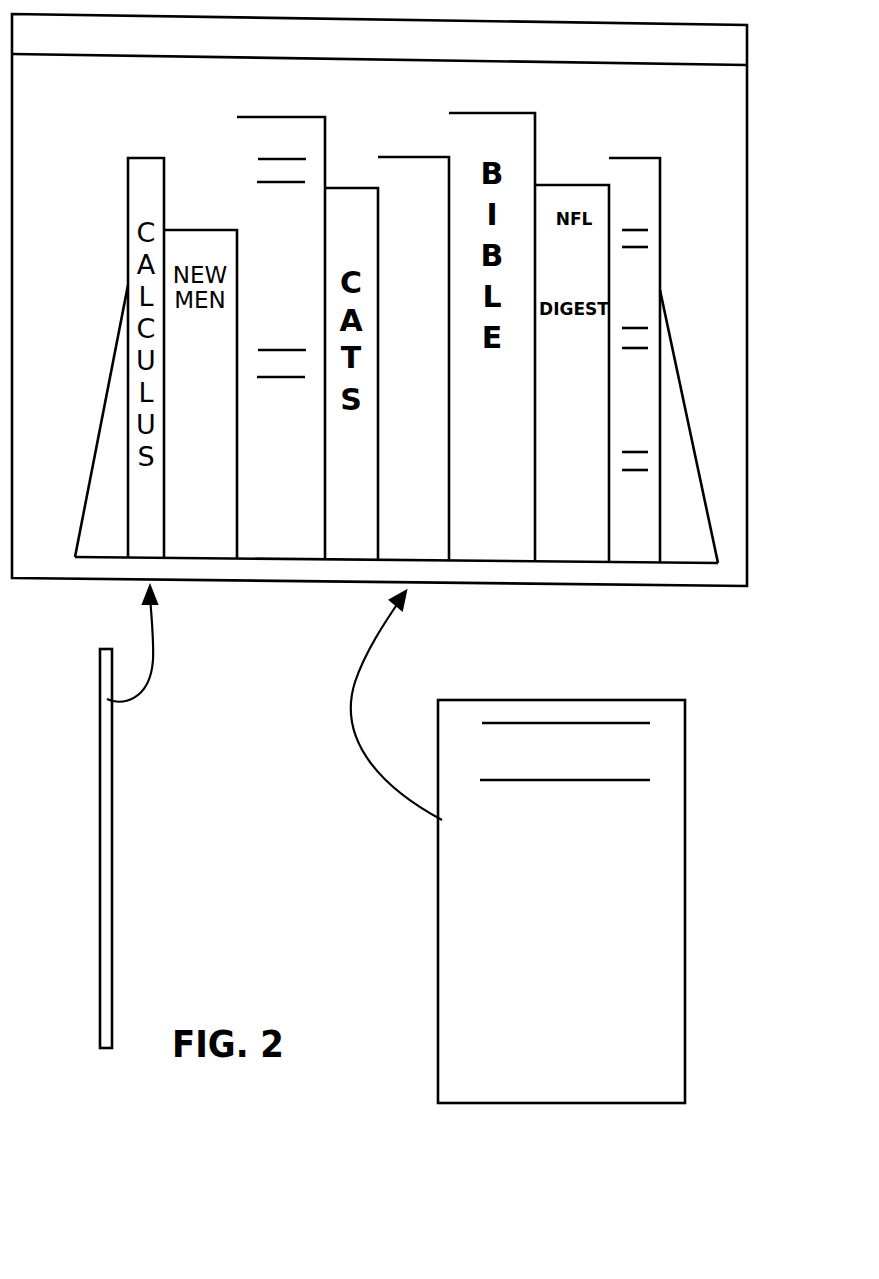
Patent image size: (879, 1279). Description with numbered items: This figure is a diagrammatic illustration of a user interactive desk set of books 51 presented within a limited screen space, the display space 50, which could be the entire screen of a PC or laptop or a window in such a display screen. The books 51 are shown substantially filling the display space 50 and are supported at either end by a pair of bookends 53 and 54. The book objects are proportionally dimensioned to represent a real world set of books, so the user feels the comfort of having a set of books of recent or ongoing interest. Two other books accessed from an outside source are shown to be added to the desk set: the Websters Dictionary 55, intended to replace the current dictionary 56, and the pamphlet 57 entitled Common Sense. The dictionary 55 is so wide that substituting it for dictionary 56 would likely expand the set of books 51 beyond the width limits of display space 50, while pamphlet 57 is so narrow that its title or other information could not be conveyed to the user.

The display space 50 is at (700, 200).
The desk set of books 51 is at (490, 563).
The bookend 53 is at (680, 518).
The bookend 54 is at (107, 467).
The Websters Dictionary 55 is at (655, 808).
The current dictionary 56 is at (410, 538).
The pamphlet 57 is at (105, 888).